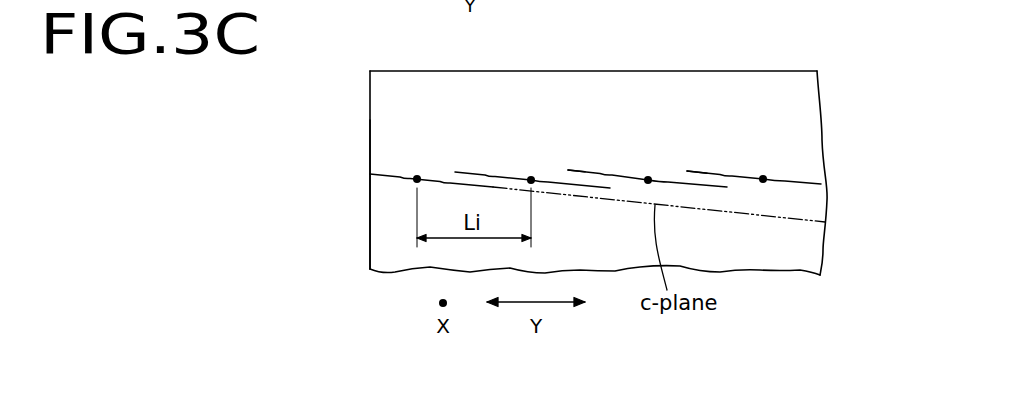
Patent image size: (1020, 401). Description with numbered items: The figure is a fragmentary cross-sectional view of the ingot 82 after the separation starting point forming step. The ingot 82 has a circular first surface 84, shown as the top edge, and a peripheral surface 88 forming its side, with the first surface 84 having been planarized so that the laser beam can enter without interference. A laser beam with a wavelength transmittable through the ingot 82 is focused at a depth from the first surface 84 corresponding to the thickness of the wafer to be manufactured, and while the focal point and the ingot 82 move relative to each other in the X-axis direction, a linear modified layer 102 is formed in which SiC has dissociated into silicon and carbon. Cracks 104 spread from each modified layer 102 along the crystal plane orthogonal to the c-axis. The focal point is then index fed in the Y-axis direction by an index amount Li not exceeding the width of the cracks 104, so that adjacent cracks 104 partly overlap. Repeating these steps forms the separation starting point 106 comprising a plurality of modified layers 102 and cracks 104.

The ingot 82 is at (332, 66).
The first surface 84 is at (705, 71).
The peripheral surface 88 is at (368, 230).
The modified layer 102 is at (531, 176).
The cracks 104 is at (585, 171).
The separation starting point 106 is at (713, 113).